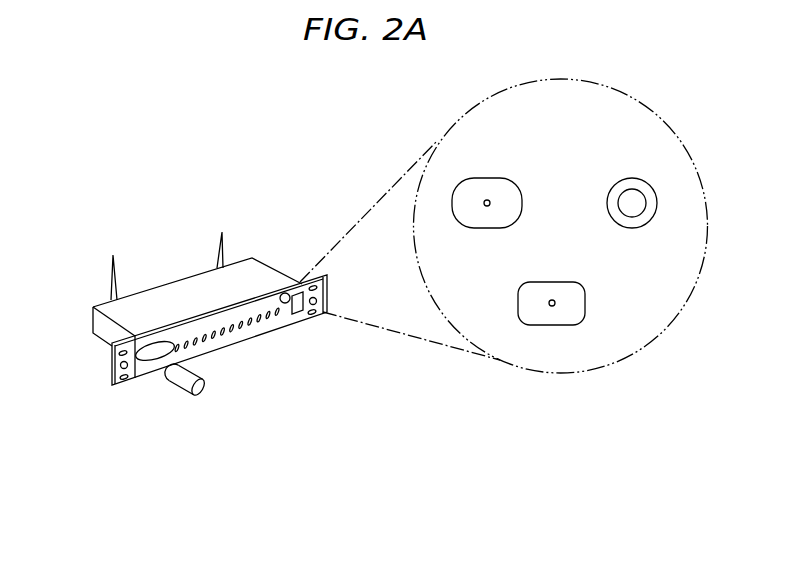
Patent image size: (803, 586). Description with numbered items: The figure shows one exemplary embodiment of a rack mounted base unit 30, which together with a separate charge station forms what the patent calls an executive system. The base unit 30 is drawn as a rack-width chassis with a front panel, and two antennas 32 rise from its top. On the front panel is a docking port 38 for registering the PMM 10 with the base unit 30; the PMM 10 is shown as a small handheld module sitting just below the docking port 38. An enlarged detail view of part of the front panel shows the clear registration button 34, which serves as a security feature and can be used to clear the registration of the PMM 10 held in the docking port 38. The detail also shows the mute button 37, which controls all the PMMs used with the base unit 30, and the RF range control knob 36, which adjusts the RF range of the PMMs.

The rack mounted base unit 30 is at (114, 205).
The antenna 32 is at (117, 268).
The clear registration button 34 is at (488, 178).
The RF range control knob 36 is at (617, 190).
The mute button 37 is at (587, 310).
The docking port 38 is at (148, 359).
The PMM 10 is at (205, 388).